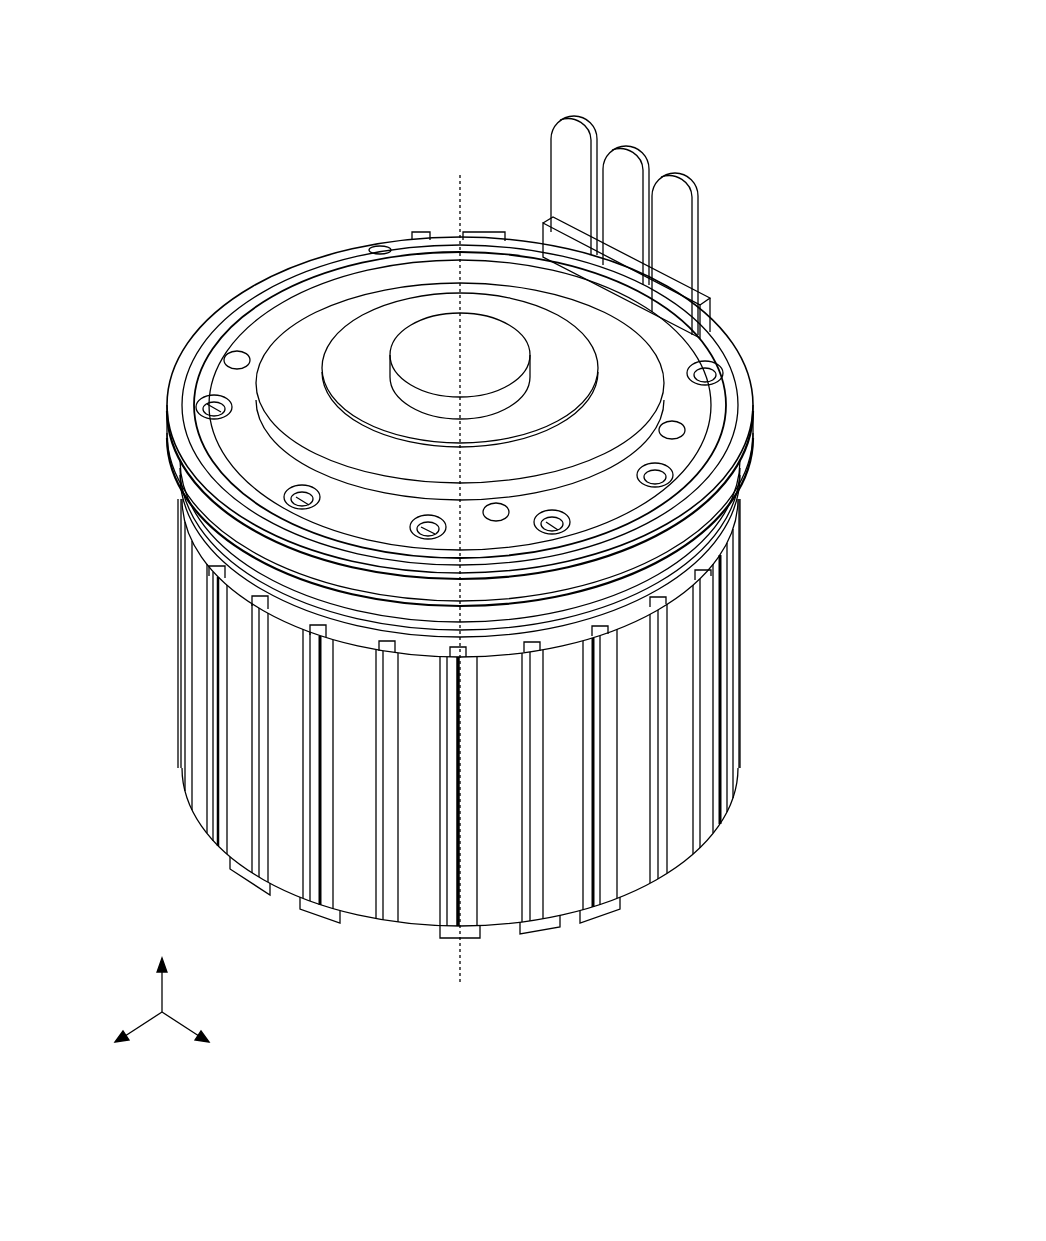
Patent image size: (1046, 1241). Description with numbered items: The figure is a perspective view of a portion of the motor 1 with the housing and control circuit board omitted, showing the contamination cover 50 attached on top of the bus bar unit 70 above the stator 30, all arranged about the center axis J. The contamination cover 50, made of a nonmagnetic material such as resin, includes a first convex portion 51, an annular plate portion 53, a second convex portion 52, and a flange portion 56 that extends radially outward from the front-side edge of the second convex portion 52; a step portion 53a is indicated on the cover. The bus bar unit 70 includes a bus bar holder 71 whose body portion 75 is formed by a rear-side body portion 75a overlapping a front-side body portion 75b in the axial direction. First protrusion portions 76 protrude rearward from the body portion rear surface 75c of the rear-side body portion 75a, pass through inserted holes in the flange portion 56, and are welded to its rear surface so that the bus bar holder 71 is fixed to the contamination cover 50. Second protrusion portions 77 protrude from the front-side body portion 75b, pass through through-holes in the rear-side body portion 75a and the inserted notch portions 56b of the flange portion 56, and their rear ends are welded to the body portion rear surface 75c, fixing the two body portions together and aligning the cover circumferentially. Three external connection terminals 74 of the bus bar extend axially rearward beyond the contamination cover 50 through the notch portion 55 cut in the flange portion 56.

The motor 1 is at (735, 88).
The stator 30 is at (745, 746).
The contamination cover 50 is at (246, 289).
The first convex portion 51 is at (480, 345).
The second convex portion 52 is at (317, 305).
The annular plate portion 53 is at (412, 315).
The step portion 53a is at (367, 318).
The notch portion 55 is at (712, 346).
The flange portion 56 is at (277, 287).
The inserted notch portion 56b is at (212, 400).
The bus bar unit 70 is at (700, 510).
The bus bar holder 71 is at (698, 473).
The external connection terminal 74 is at (575, 140).
The body portion 75 is at (112, 462).
The rear-side body portion 75a is at (373, 545).
The front-side body portion 75b is at (385, 575).
The body portion rear surface 75c is at (520, 548).
The first protrusion portion 76 is at (378, 250).
The second protrusion portion 77 is at (206, 406).
The center axis J is at (460, 170).